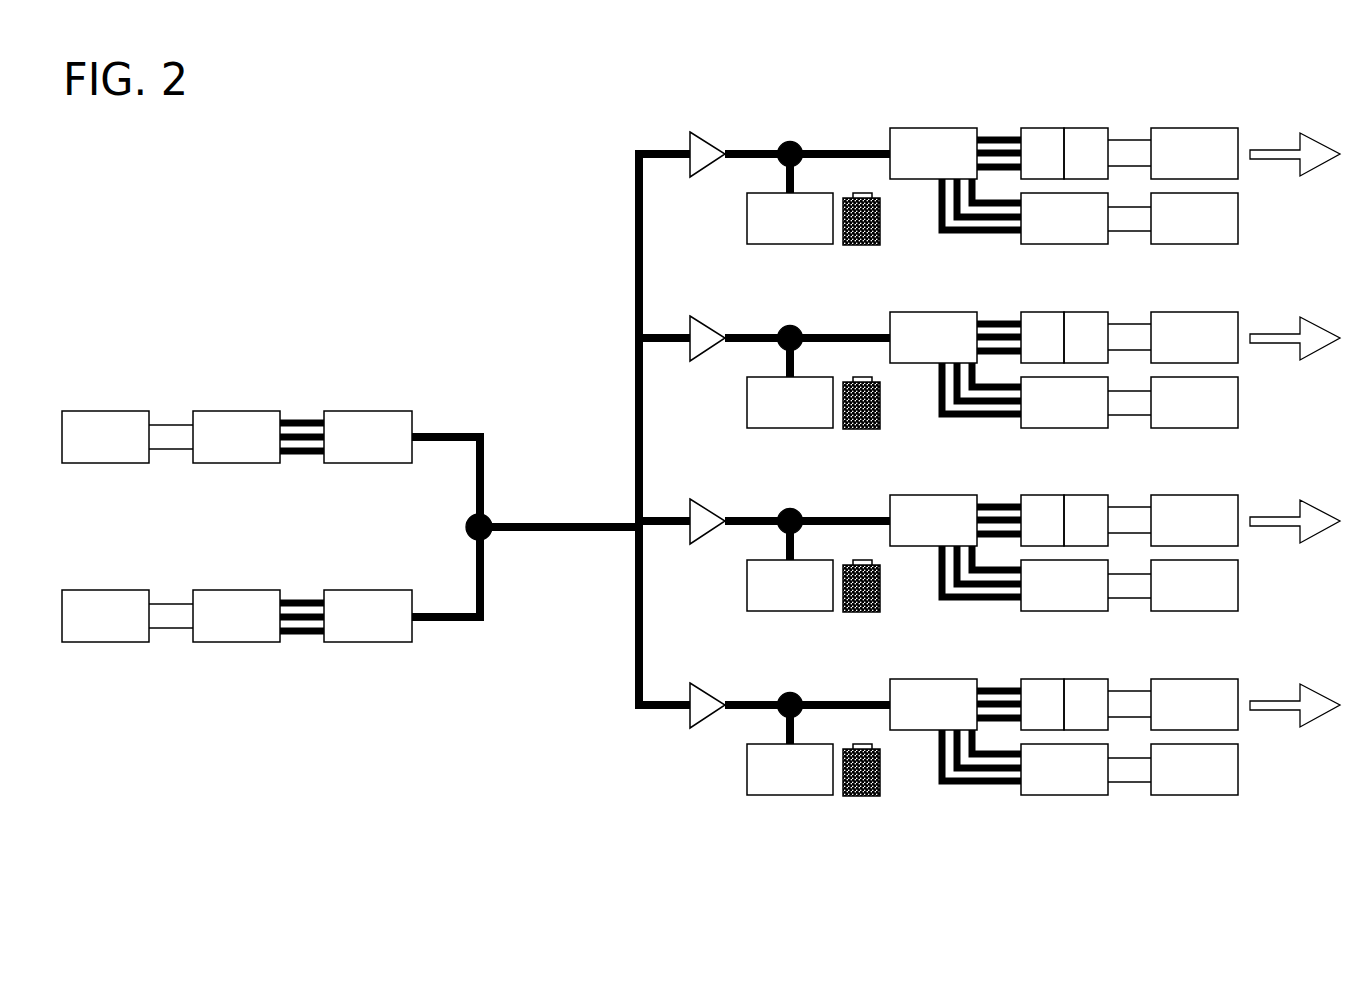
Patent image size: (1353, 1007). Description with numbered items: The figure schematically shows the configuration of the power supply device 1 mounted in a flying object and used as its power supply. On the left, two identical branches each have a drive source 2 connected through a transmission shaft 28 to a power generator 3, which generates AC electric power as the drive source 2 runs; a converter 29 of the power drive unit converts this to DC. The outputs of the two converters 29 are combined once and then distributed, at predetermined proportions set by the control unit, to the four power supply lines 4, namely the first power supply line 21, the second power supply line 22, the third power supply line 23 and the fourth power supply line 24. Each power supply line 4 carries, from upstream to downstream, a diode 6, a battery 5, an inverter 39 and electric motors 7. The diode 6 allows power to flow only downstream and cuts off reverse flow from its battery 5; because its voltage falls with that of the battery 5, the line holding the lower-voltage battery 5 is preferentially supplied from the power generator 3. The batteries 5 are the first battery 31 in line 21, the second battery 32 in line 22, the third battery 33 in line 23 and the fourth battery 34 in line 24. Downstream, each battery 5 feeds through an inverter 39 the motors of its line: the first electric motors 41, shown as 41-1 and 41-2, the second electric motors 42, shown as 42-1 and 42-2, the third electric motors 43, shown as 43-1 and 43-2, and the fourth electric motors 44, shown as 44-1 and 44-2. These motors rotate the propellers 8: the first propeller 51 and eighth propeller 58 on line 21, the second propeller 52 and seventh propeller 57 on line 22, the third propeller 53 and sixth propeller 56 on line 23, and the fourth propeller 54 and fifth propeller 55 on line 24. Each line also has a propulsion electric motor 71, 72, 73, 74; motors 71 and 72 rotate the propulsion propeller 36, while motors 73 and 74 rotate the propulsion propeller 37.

The power supply device 1 is at (358, 171).
The drive source 2 is at (103, 411).
The power generator 3 is at (234, 411).
The transmission shaft 28 is at (170, 425).
The converter 29 is at (364, 411).
The first power supply line 21 is at (661, 150).
The second power supply line 22 is at (662, 308).
The third power supply line 23 is at (662, 491).
The fourth power supply line 24 is at (662, 675).
The diode 6 is at (709, 142).
The battery 5 is at (790, 206).
The power supply line 4 is at (845, 141).
The inverter 39 is at (933, 128).
The electric motor 7 is at (1065, 111).
The first electric motors 41 is at (1065, 126).
The first electric motor 41-1 is at (1043, 128).
The first electric motor 41-2 is at (1116, 137).
The second electric motors 42 is at (1065, 309).
The second electric motor 42-1 is at (1013, 320).
The second electric motor 42-2 is at (1116, 320).
The third electric motors 43 is at (1065, 492).
The third electric motor 43-1 is at (1013, 503).
The third electric motor 43-2 is at (1116, 503).
The fourth electric motors 44 is at (1065, 676).
The fourth electric motor 44-1 is at (1013, 687).
The fourth electric motor 44-2 is at (1116, 687).
The propeller 8 is at (1232, 110).
The first propeller 51 is at (1232, 137).
The eighth propeller 58 is at (1208, 128).
The second propeller 52 is at (1221, 320).
The seventh propeller 57 is at (1221, 320).
The third propeller 53 is at (1221, 503).
The sixth propeller 56 is at (1221, 503).
The fourth propeller 54 is at (1221, 687).
The fifth propeller 55 is at (1221, 687).
The propulsion electric motor 71 is at (1065, 244).
The propulsion electric motor 72 is at (1069, 420).
The propulsion electric motor 73 is at (1069, 603).
The propulsion electric motor 74 is at (1069, 787).
The propulsion propeller 36 is at (1195, 244).
The propulsion propeller 37 is at (1195, 611).
The first battery 31 is at (790, 244).
The second battery 32 is at (790, 434).
The third battery 33 is at (790, 618).
The fourth battery 34 is at (790, 802).